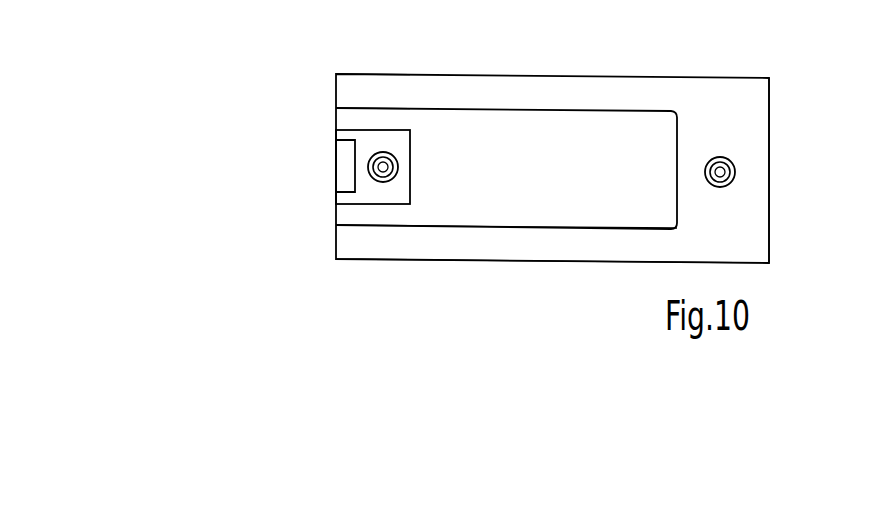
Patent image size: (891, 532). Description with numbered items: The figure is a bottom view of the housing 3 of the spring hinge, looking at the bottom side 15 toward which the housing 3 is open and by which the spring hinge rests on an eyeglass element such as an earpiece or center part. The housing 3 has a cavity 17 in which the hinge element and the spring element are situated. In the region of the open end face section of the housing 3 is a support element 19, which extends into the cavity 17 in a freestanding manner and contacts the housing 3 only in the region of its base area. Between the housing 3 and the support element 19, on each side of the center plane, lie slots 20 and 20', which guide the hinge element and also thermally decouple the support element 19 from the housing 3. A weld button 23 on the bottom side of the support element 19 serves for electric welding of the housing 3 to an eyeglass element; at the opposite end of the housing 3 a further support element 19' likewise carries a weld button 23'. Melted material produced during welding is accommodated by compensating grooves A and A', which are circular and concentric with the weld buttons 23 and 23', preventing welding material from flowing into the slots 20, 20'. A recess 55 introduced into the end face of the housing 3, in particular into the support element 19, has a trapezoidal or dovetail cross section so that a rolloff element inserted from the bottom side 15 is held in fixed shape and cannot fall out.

The bottom side 15 is at (685, 93).
The cavity 17 is at (561, 170).
The support element 19 is at (425, 108).
The further support element 19' is at (810, 178).
The slot 20 is at (340, 70).
The slot 20' is at (368, 274).
The weld button 23 is at (419, 231).
The weld button 23' is at (795, 137).
The recess 55 is at (345, 170).
The housing 3 is at (574, 241).
The compensating groove A is at (275, 235).
The compensating groove A' is at (808, 187).